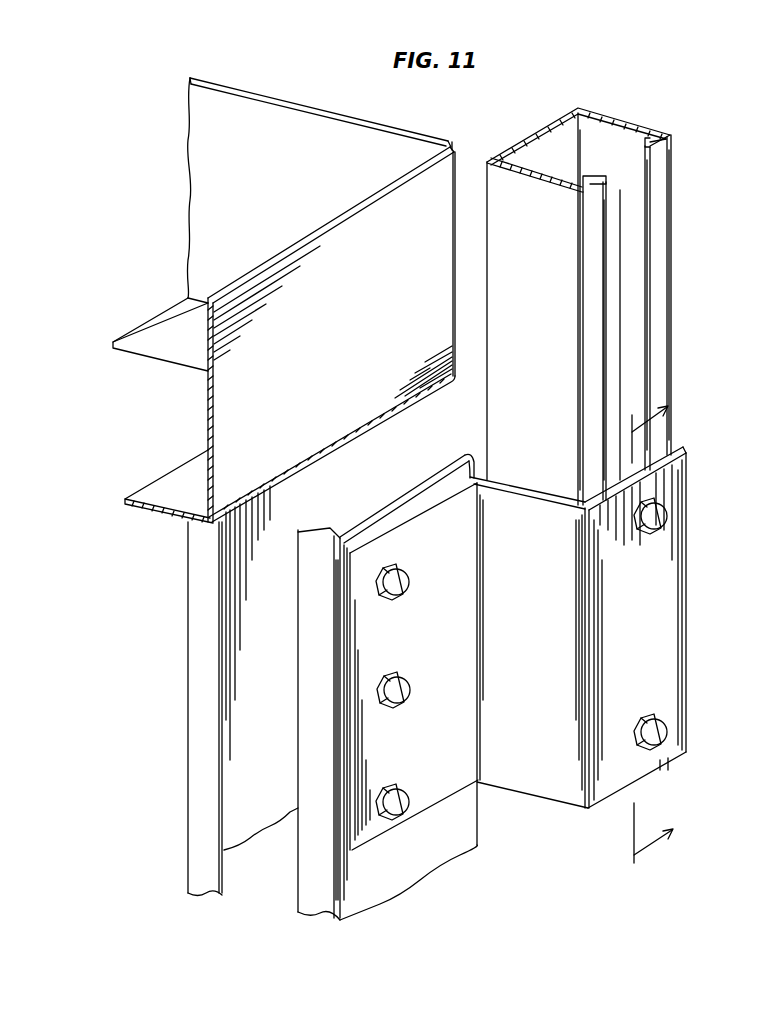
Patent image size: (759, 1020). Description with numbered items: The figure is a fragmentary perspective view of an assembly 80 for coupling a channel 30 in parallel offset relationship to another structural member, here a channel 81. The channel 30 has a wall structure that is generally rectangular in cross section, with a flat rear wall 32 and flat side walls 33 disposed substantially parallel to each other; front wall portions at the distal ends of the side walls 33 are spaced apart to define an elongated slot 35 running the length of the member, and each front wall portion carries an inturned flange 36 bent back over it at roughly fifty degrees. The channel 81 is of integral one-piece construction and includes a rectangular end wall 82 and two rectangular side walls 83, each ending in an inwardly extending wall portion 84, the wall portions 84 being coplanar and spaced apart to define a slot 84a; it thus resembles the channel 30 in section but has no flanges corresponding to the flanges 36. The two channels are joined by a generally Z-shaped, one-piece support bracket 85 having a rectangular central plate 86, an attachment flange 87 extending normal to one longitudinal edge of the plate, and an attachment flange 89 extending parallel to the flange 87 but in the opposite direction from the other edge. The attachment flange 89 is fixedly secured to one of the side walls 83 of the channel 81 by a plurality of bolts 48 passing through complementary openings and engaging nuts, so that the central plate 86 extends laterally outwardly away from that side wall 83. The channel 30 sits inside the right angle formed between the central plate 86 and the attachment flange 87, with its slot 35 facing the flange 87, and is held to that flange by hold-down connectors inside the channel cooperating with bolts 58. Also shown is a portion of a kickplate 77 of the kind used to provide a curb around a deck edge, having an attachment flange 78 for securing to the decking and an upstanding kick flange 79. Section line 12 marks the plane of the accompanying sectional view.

The section line 12 is at (640, 640).
The channel 30 is at (634, 104).
The rear wall 32 is at (545, 125).
The side walls 33 is at (618, 108).
The slot 35 is at (632, 218).
The flange 36 is at (643, 142).
The bolts 48 is at (397, 590).
The bolts 58 is at (658, 517).
The kickplate 77 is at (327, 100).
The attachment flange 78 is at (143, 322).
The kick flange 79 is at (200, 178).
The assembly 80 is at (114, 126).
The channel 81 is at (182, 645).
The end wall 82 is at (430, 443).
The side walls 83 is at (262, 812).
The wall portion 84 is at (312, 716).
The slot 84a is at (268, 548).
The support bracket 85 is at (519, 793).
The central plate 86 is at (535, 500).
The attachment flange 87 is at (670, 606).
The attachment flange 89 is at (438, 785).